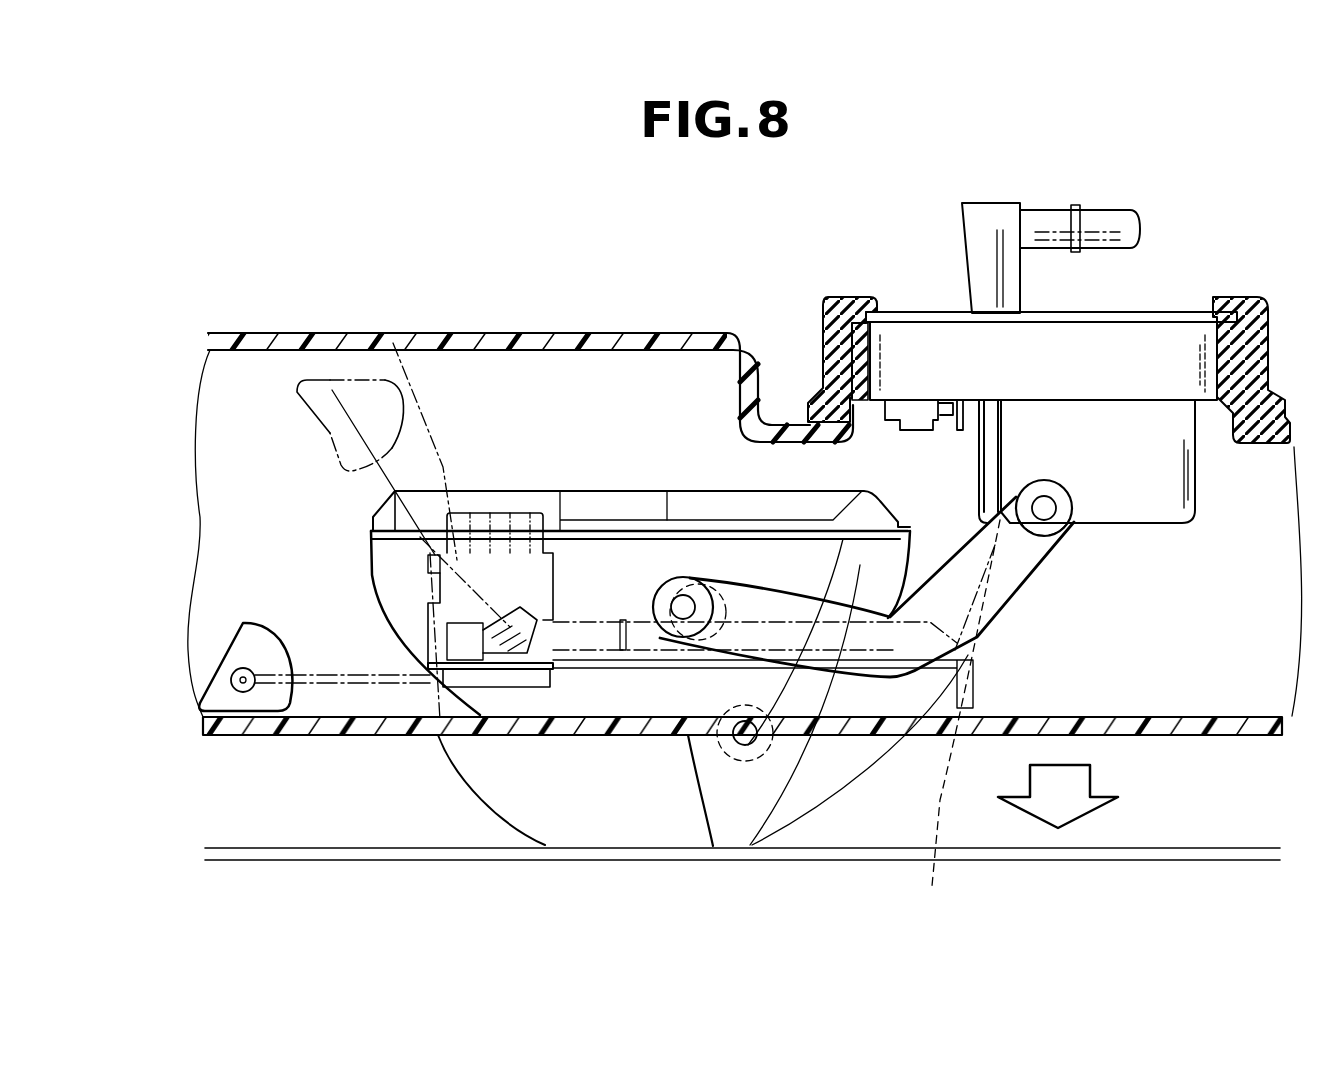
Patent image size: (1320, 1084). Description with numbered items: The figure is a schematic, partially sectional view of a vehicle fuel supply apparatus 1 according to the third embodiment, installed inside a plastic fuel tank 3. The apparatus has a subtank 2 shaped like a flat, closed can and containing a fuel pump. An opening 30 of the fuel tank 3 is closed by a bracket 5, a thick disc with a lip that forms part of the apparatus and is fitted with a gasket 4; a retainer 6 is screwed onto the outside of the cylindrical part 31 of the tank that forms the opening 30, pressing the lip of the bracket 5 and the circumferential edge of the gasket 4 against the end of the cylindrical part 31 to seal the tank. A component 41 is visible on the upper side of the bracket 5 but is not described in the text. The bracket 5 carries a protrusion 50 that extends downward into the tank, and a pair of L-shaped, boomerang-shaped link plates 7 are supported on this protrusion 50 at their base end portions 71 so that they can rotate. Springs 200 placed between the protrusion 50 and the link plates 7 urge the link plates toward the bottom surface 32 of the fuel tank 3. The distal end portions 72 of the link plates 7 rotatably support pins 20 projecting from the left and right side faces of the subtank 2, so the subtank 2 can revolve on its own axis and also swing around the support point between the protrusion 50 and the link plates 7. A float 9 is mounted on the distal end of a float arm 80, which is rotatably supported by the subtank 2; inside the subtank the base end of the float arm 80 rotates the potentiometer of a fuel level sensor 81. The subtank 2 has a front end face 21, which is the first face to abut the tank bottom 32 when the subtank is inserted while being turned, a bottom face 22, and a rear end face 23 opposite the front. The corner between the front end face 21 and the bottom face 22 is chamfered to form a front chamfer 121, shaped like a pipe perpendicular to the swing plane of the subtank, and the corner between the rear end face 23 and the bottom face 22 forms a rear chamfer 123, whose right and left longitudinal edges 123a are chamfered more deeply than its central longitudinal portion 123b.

The fuel supply apparatus 1 is at (512, 483).
The subtank 2 is at (680, 555).
The fuel tank 3 is at (258, 338).
The gasket 4 is at (862, 328).
The bracket 5 is at (1133, 350).
The retainer 6 is at (827, 310).
The link plate 7 is at (1012, 572).
The float 9 is at (253, 630).
The pin 20 is at (660, 600).
The front end face 21 is at (367, 557).
The bottom face 22 is at (658, 850).
The rear end face 23 is at (912, 557).
The opening 30 is at (1192, 297).
The cylindrical part 31 is at (822, 362).
The bottom surface 32 is at (716, 850).
The fuel outlet pipe 41 is at (1105, 216).
The protrusion 50 is at (1087, 461).
The base end portion 71 is at (1046, 486).
The distal end portion 72 is at (700, 580).
The float arm 80 is at (333, 672).
The fuel level sensor 81 is at (470, 575).
The front chamfer 121 is at (400, 643).
The rear chamfer 123 is at (850, 690).
The longitudinal edges 123a is at (790, 740).
The central longitudinal portion 123b is at (971, 863).
The spring 200 is at (1069, 492).